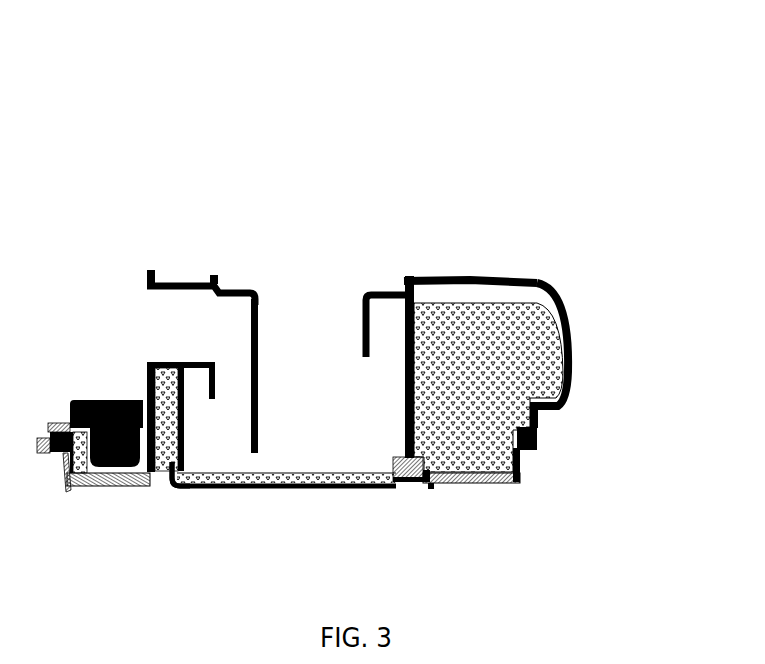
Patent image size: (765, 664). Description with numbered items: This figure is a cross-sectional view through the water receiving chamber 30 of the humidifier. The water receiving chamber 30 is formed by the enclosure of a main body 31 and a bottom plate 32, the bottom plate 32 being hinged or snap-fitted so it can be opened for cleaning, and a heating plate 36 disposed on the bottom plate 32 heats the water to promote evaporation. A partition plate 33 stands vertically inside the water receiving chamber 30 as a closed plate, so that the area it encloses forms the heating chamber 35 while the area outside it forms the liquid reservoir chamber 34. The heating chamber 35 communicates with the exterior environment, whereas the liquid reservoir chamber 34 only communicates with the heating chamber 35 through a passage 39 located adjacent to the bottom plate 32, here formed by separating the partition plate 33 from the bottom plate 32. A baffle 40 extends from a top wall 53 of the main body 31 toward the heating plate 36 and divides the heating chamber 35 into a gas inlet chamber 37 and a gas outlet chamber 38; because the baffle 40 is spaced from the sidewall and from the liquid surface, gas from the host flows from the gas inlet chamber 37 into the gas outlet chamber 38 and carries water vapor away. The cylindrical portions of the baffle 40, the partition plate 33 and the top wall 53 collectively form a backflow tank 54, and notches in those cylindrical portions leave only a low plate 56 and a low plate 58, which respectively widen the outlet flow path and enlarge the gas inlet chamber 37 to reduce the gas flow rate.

The water receiving chamber 30 is at (442, 153).
The main body 31 is at (570, 378).
The bottom plate 32 is at (455, 480).
The partition plate 33 is at (412, 310).
The liquid reservoir chamber 34 is at (523, 353).
The heating chamber 35 is at (342, 423).
The heating plate 36 is at (257, 487).
The gas inlet chamber 37 is at (208, 333).
The gas outlet chamber 38 is at (342, 327).
The passage 39 is at (173, 473).
The baffle 40 is at (259, 370).
The top wall 53 is at (392, 292).
The backflow tank 54 is at (163, 363).
The plate 56 is at (360, 303).
The plate 58 is at (211, 398).